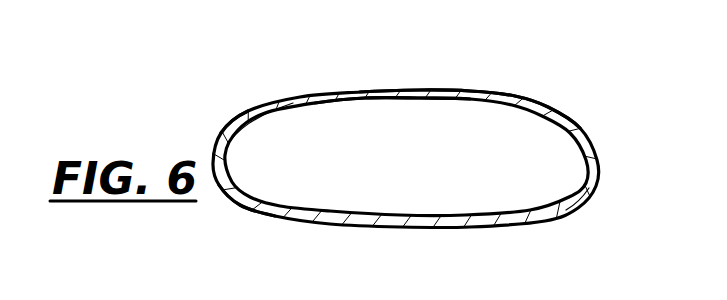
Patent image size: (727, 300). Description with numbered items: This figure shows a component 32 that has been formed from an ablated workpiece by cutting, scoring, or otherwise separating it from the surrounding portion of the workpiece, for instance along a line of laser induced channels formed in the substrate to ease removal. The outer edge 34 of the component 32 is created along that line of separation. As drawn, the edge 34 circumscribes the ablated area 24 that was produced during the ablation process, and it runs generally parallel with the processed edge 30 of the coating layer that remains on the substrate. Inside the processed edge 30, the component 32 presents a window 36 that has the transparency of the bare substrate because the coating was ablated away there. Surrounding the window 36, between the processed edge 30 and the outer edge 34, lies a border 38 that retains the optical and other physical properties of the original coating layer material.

The ablated area 24 is at (306, 117).
The processed edge 30 is at (248, 132).
The component 32 is at (209, 106).
The edge 34 is at (507, 93).
The window 36 is at (393, 130).
The border 38 is at (238, 209).